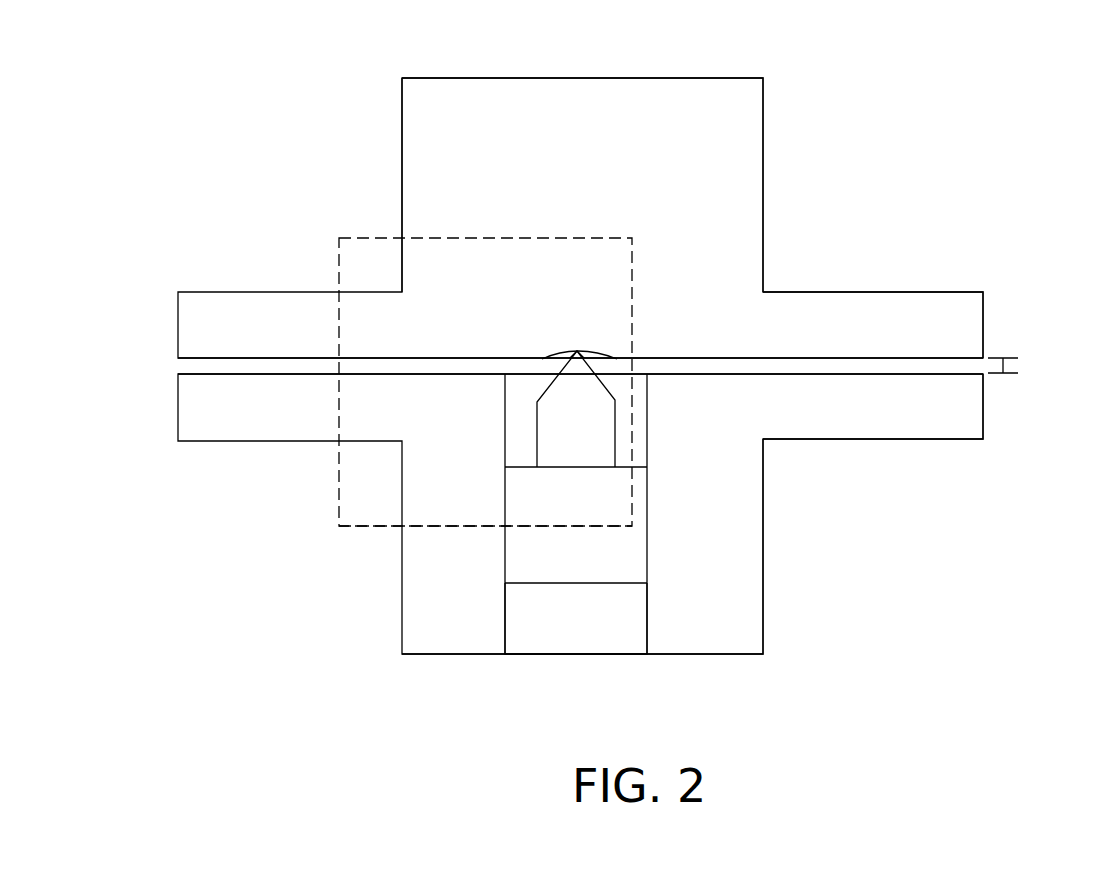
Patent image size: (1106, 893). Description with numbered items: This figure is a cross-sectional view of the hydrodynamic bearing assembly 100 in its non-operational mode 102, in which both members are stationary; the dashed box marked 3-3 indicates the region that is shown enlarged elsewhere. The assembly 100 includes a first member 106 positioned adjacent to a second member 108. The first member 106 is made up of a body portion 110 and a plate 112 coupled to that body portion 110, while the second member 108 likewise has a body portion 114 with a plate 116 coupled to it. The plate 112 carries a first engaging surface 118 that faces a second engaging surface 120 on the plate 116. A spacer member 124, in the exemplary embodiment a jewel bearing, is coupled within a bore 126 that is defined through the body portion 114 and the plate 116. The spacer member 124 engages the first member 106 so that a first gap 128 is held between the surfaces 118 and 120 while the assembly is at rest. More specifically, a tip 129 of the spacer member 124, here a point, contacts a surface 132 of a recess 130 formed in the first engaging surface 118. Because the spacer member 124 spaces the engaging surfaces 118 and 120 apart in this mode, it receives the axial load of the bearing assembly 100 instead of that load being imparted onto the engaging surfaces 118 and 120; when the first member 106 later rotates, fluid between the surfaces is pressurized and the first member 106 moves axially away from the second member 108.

The hydrodynamic bearing assembly 100 is at (205, 148).
The non-operational mode 102 is at (945, 118).
The first member 106 is at (323, 228).
The second member 108 is at (325, 540).
The body portion 110 is at (745, 125).
The plate 112 is at (785, 307).
The body portion 114 is at (748, 602).
The plate 116 is at (843, 424).
The first engaging surface 118 is at (902, 357).
The second engaging surface 120 is at (903, 375).
The spacer member 124 is at (550, 563).
The bore 126 is at (615, 642).
The first gap 128 is at (1005, 365).
The tip 129 is at (577, 351).
The recess 130 is at (617, 340).
The surface 132 is at (555, 353).
The section line 3-3 is at (339, 475).